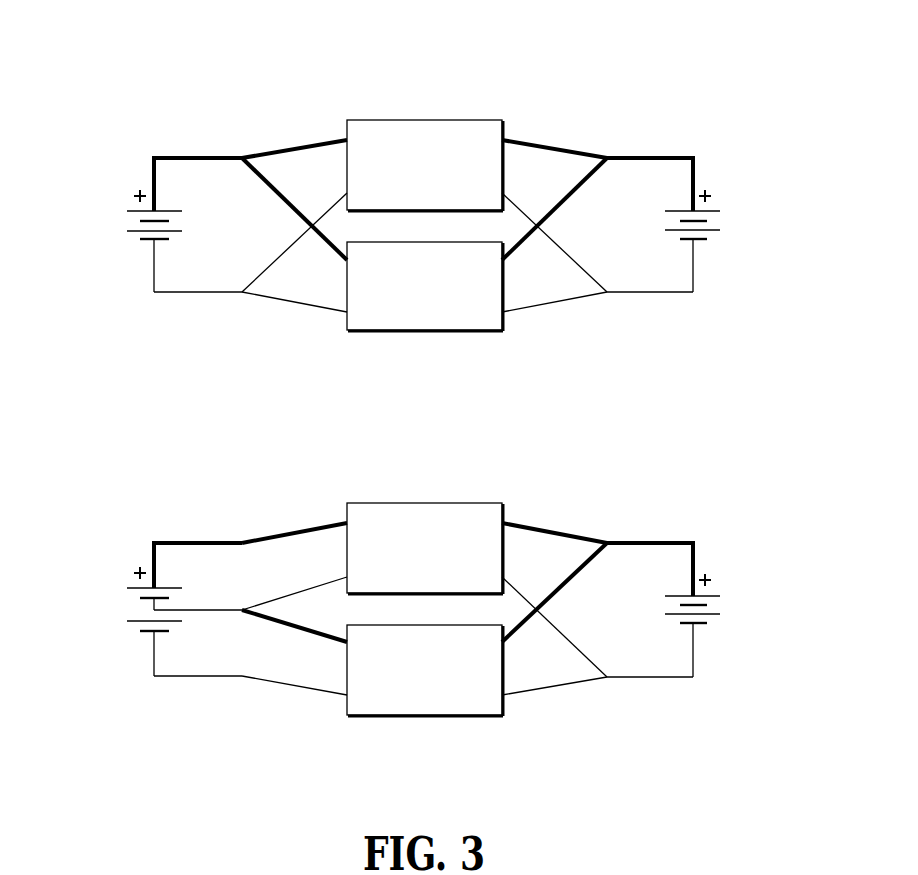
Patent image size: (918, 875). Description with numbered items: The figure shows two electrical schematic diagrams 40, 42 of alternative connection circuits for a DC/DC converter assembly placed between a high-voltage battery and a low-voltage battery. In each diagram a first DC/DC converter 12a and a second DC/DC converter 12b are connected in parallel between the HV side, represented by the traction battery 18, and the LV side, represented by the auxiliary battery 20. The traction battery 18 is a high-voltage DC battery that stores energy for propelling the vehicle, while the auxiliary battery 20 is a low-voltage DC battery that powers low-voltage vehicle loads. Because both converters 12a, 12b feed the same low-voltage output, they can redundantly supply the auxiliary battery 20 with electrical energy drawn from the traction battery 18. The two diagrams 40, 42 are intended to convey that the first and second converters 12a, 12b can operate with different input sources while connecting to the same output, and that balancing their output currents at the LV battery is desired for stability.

The first DC/DC converter 12a is at (420, 120).
The second DC/DC converter 12b is at (420, 330).
The traction battery 18 is at (128, 211).
The auxiliary battery 20 is at (718, 211).
The electrical schematic diagram 40 is at (615, 86).
The electrical schematic diagram 42 is at (615, 469).